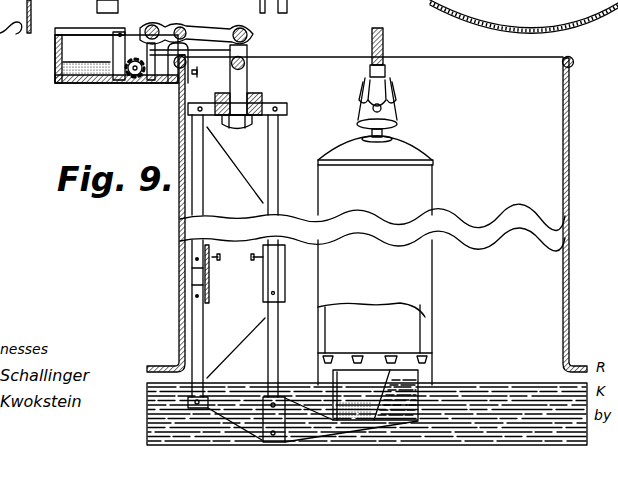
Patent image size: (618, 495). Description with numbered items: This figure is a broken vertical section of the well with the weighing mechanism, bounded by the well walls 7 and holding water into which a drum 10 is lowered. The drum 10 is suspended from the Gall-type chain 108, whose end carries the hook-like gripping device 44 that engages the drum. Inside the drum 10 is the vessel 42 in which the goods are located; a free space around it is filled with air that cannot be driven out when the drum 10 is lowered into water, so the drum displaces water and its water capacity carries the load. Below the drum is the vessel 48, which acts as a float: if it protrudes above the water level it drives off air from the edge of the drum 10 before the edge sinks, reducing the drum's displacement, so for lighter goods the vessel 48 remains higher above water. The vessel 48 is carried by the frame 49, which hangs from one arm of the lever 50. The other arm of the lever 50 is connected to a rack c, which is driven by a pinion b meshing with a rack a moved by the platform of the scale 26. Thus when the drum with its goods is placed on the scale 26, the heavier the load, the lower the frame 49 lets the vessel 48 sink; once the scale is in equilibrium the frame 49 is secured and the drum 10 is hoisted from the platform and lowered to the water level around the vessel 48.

The tank wall 7 is at (181, 145).
The drum 10 is at (425, 293).
The scale 26 is at (67, 48).
The vessel 42 is at (415, 333).
The hook-like gripping device 44 is at (385, 84).
The floating vessel 48 is at (412, 376).
The frame 49 is at (283, 164).
The lever 50 is at (198, 36).
The chain 108 is at (372, 40).
The rack a is at (125, 78).
The pinion b is at (135, 77).
The rack c is at (150, 76).